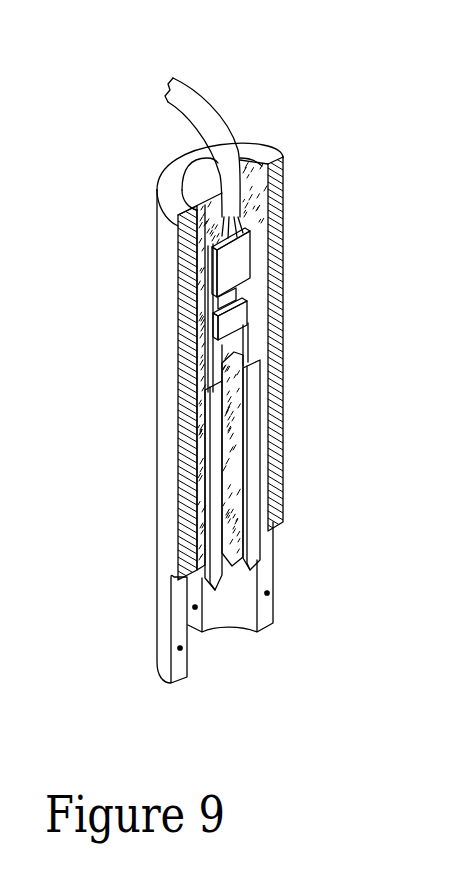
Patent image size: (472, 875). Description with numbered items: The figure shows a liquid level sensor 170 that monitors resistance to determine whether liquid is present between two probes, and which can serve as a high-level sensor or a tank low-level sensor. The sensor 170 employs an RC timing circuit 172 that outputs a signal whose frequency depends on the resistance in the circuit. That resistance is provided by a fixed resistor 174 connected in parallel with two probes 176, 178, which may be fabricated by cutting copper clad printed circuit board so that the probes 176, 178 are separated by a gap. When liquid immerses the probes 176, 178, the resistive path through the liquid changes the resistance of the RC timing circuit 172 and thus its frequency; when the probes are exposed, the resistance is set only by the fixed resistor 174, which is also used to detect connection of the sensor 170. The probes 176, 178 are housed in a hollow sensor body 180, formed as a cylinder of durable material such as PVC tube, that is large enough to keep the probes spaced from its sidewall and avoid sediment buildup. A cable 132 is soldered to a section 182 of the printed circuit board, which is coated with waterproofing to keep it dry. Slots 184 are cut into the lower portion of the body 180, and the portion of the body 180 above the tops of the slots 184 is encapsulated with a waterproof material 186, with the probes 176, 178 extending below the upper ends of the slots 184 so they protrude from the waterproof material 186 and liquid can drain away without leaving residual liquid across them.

The cable 132 is at (208, 112).
The liquid level sensor 170 is at (336, 142).
The RC timing circuit 172 is at (245, 258).
The fixed resistor 174 is at (242, 320).
The probe 176 is at (217, 473).
The probe 178 is at (252, 460).
The sensor body 180 is at (148, 634).
The section of the printed circuit board 182 is at (210, 297).
The slots 184 is at (195, 607).
The waterproof material 186 is at (238, 523).